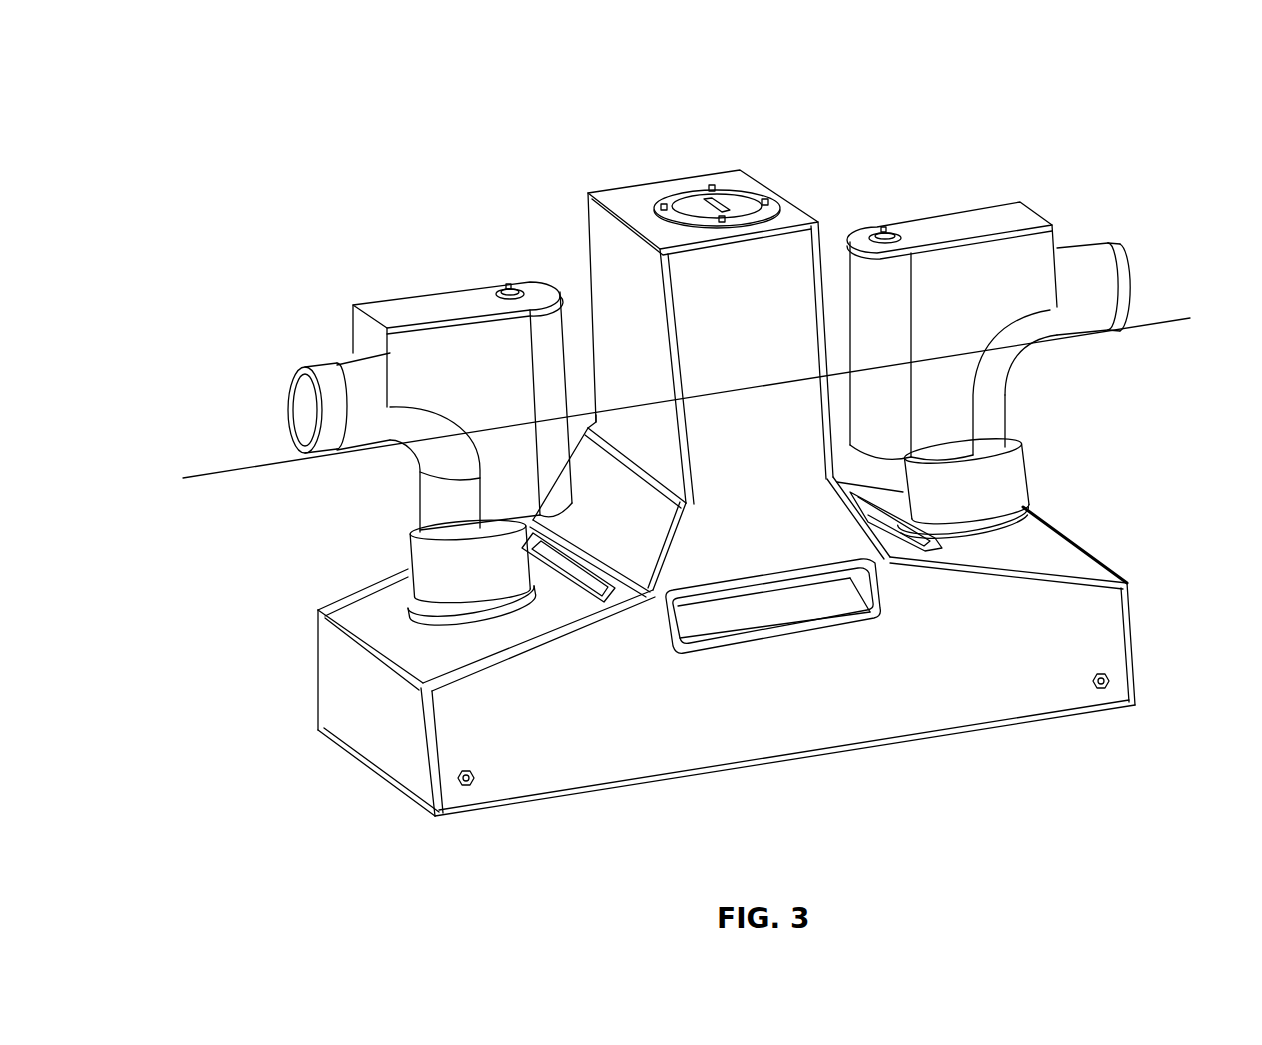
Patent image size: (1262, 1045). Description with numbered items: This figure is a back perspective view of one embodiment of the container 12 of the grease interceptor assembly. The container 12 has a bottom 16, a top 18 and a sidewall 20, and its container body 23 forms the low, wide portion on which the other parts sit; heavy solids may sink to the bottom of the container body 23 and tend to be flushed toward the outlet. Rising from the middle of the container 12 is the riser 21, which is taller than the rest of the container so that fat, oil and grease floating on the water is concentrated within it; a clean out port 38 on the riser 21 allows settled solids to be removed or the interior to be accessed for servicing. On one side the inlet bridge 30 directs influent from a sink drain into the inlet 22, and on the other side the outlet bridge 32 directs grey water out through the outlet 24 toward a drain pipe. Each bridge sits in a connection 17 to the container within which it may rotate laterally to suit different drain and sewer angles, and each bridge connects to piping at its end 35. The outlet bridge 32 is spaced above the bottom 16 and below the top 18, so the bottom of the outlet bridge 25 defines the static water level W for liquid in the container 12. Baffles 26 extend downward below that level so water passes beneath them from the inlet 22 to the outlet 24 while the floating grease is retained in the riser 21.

The container 12 is at (650, 118).
The bottom 16 is at (388, 790).
The connections 17 is at (428, 553).
The top 18 is at (633, 200).
The sidewall 20 is at (965, 685).
The riser 21 is at (756, 316).
The inlet 22 is at (1030, 527).
The container body 23 is at (786, 708).
The outlet 24 is at (408, 613).
The bottom of the outlet bridge 25 is at (303, 431).
The baffle 26 is at (567, 583).
The inlet bridge 30 is at (972, 316).
The outlet bridge 32 is at (486, 386).
The ends 35 is at (303, 432).
The clean out port 38 is at (743, 197).